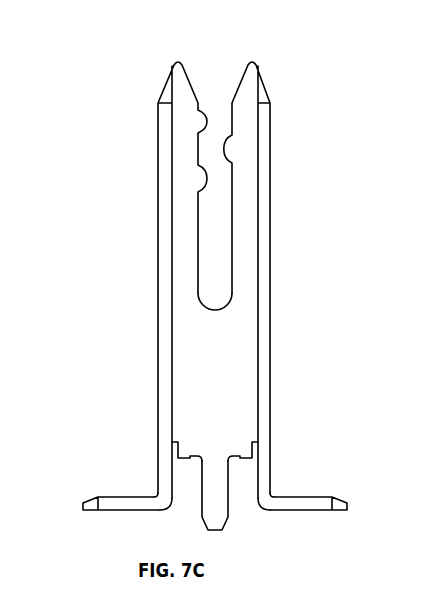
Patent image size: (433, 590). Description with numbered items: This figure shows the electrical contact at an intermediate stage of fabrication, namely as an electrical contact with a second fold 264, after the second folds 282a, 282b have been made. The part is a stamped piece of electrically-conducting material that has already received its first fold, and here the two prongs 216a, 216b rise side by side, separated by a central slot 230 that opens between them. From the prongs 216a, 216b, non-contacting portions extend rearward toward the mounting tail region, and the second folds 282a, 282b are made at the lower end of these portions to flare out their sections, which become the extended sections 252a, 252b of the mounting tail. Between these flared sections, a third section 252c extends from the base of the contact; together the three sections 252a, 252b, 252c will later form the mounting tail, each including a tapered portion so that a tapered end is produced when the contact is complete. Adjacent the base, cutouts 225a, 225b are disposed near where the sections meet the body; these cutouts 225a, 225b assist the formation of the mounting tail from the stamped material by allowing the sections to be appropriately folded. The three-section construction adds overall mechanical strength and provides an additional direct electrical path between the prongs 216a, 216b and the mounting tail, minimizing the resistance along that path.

The prong 216a is at (145, 60).
The prong 216b is at (280, 60).
The electrical contact with a second fold 264 is at (217, 277).
The slot 230 is at (212, 310).
The cutout 225a is at (176, 446).
The cutout 225b is at (254, 446).
The second fold 282a is at (158, 491).
The second fold 282b is at (272, 491).
The extended section 252a is at (118, 500).
The extended section 252b is at (310, 502).
The third section 252c is at (223, 519).